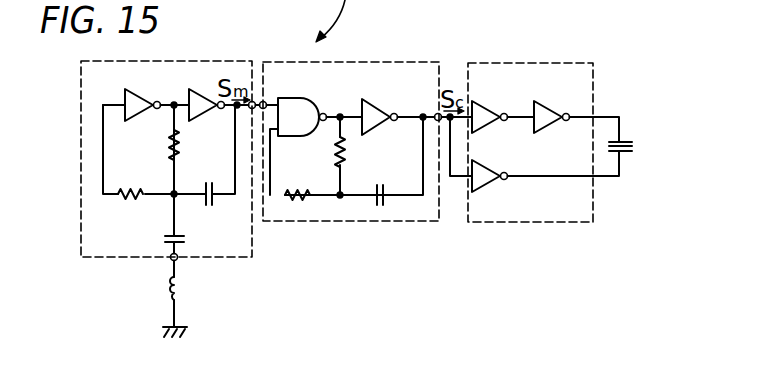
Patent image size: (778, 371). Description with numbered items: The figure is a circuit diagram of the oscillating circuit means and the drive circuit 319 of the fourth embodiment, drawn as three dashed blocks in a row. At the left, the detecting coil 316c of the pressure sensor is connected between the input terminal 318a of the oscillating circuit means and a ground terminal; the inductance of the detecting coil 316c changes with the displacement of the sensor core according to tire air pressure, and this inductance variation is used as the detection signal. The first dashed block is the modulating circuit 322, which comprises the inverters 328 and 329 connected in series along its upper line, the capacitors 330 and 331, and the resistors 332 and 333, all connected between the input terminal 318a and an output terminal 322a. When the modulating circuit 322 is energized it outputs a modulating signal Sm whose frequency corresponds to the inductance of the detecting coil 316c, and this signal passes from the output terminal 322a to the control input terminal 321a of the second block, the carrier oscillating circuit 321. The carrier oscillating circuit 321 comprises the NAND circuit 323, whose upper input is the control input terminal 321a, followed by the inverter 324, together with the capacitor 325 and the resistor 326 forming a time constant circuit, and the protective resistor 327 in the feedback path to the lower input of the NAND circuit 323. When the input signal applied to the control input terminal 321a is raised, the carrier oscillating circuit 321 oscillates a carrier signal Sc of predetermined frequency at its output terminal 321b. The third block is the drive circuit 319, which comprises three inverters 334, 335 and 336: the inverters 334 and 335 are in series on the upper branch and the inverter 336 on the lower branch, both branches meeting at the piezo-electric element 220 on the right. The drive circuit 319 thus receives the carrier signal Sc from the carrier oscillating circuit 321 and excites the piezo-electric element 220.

The modulating circuit 322 is at (233, 50).
The output terminal of modulating circuit 322a is at (253, 100).
The carrier oscillating circuit 321 is at (412, 62).
The control input terminal 321a is at (266, 102).
The output terminal 321b is at (435, 115).
The drive circuit 319 is at (572, 63).
The inverter 328 is at (147, 89).
The inverter 329 is at (207, 89).
The resistor 332 is at (181, 148).
The resistor 333 is at (140, 190).
The capacitor 330 is at (211, 205).
The capacitor 331 is at (165, 238).
The input terminal of oscillating circuit means 318a is at (172, 262).
The detecting coil 316c is at (183, 291).
The NAND circuit 323 is at (297, 136).
The inverter 324 is at (381, 124).
The resistor 326 is at (345, 155).
The protective resistor 327 is at (295, 199).
The capacitor 325 is at (382, 207).
The inverter 334 is at (488, 108).
The inverter 335 is at (547, 108).
The inverter 336 is at (492, 170).
The piezo-electric element 220 is at (622, 141).